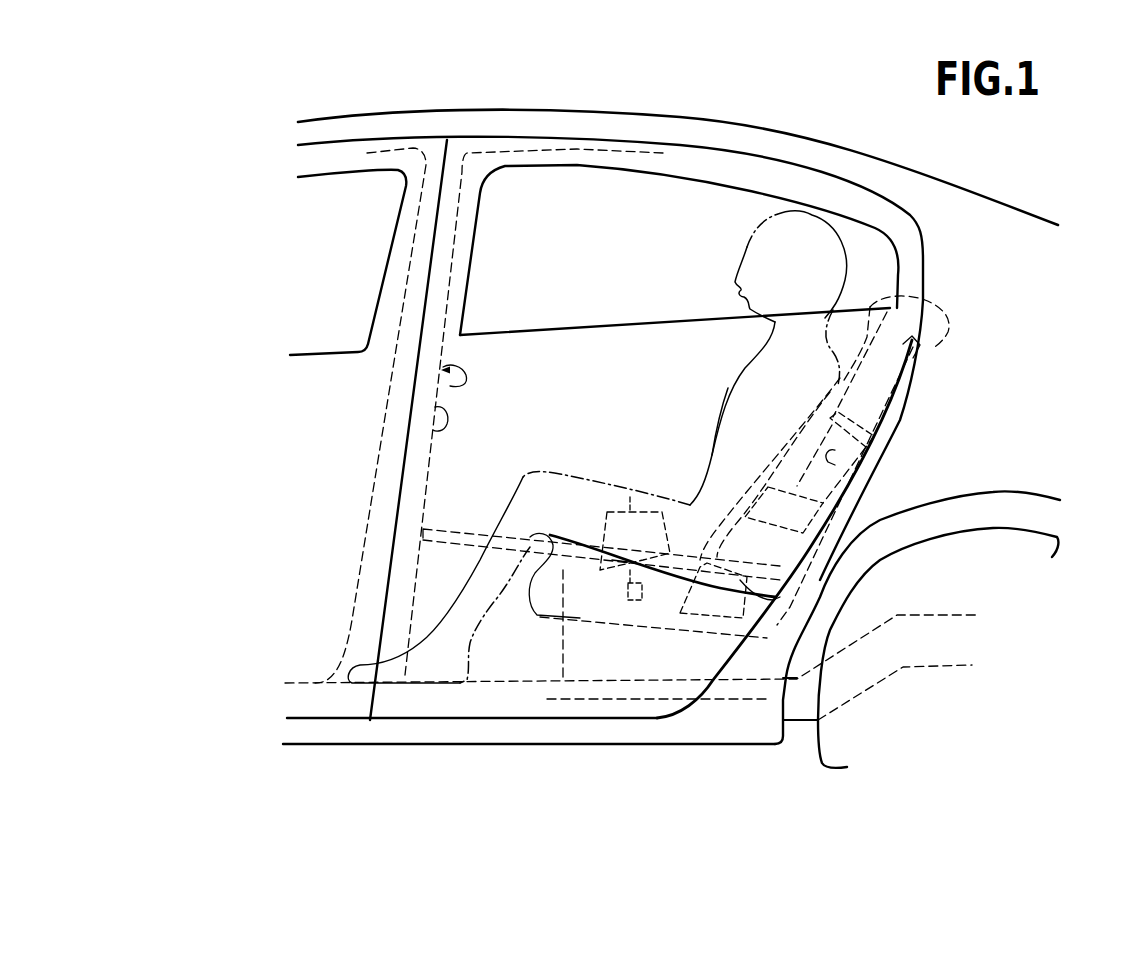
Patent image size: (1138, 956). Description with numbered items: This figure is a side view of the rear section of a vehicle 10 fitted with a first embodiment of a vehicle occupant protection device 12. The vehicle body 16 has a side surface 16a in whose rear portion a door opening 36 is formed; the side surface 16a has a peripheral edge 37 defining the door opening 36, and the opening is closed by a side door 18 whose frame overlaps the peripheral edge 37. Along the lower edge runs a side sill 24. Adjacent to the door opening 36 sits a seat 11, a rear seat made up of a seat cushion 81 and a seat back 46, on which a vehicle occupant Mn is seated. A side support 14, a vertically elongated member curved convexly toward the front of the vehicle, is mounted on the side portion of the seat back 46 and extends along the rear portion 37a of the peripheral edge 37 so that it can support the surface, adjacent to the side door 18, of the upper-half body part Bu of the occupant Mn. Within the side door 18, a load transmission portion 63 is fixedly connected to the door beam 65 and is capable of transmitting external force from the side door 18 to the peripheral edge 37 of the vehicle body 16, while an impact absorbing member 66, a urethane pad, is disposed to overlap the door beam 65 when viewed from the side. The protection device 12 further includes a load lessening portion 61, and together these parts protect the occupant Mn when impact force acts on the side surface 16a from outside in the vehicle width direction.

The vehicle 10 is at (296, 98).
The seat 11 is at (612, 392).
The vehicle occupant protection device 12 is at (942, 317).
The side support 14 is at (877, 352).
The vehicle body 16 is at (302, 750).
The side surface 16a is at (398, 733).
The side door 18 is at (450, 296).
The side sill 24 is at (452, 748).
The door opening 36 is at (450, 387).
The peripheral edge 37 is at (437, 430).
The rear portion of the peripheral edge 37a is at (832, 465).
The seat back 46 is at (770, 450).
The load lessening portion 61 is at (787, 496).
The load transmission portion 63 is at (703, 617).
The door beam 65 is at (572, 562).
The impact absorbing member 66 is at (620, 566).
The seat cushion 81 is at (685, 565).
The vehicle occupant Mn is at (751, 230).
The upper-half body part Bu is at (723, 410).